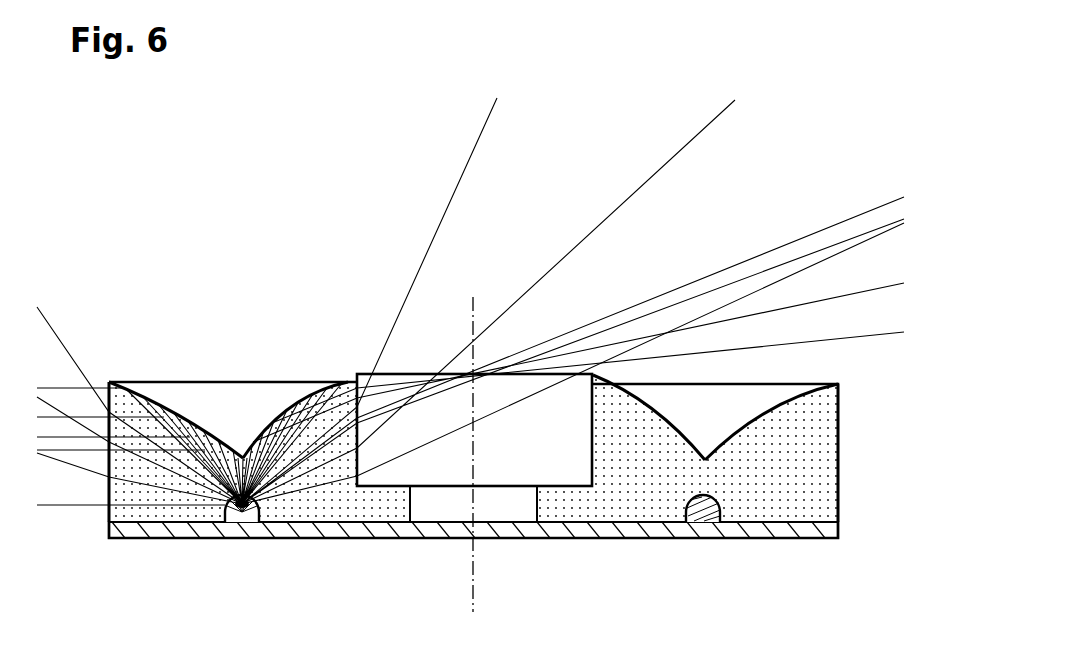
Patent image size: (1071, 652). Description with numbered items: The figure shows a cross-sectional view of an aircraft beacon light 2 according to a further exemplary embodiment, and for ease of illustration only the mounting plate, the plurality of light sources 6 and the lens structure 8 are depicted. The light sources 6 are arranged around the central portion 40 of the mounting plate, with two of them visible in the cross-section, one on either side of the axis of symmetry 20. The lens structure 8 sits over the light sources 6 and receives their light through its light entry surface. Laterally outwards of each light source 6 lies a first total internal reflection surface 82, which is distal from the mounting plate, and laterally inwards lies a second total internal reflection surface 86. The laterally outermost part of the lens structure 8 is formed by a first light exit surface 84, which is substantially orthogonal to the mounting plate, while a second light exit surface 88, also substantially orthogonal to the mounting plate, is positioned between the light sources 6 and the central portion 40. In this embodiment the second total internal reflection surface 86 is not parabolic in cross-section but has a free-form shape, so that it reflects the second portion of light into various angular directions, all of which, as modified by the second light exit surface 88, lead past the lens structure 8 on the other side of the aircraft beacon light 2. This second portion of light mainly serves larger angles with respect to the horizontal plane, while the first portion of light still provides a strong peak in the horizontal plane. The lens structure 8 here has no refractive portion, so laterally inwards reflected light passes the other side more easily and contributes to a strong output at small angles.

The aircraft beacon light 2 is at (314, 177).
The light sources 6 is at (243, 524).
The lens structure 8 is at (861, 449).
The axis of symmetry 20 is at (476, 605).
The central portion 40 is at (622, 532).
The first total internal reflection surface 82 is at (169, 407).
The first light exit surface 84 is at (106, 489).
The second total internal reflection surface 86 is at (276, 422).
The second light exit surface 88 is at (360, 455).